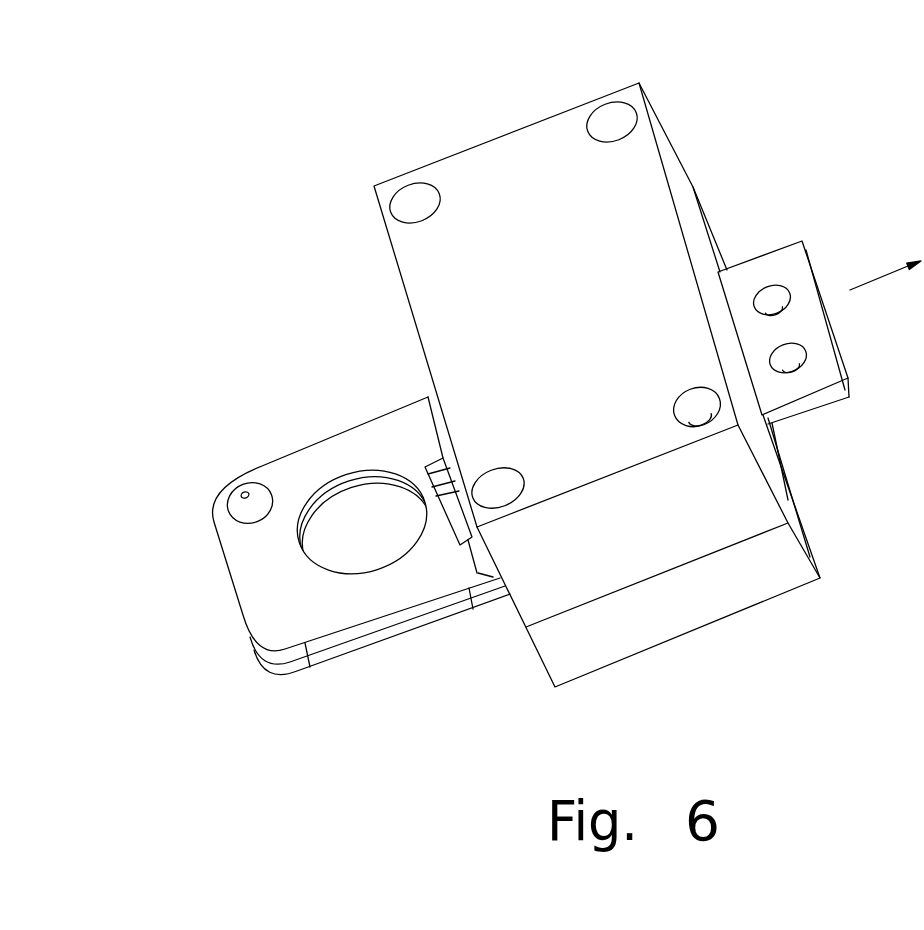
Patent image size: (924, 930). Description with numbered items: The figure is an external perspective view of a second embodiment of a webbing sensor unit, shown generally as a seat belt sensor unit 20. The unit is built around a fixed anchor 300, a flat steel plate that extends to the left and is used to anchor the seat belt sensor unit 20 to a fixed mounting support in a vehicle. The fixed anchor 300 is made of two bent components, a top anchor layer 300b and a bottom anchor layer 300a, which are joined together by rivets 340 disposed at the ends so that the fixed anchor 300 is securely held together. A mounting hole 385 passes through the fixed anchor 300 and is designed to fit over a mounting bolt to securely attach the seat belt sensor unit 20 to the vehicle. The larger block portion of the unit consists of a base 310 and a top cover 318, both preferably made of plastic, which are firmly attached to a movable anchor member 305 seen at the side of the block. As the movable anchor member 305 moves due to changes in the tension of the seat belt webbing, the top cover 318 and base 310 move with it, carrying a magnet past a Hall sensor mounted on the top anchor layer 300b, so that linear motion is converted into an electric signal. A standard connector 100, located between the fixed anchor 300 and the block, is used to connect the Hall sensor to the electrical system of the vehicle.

The seat belt sensor unit 20 is at (224, 150).
The standard connector 100 is at (467, 533).
The fixed anchor 300 is at (319, 560).
The bottom anchor layer 300a is at (327, 655).
The top anchor layer 300b is at (280, 657).
The movable anchor member 305 is at (834, 400).
The base 310 is at (812, 552).
The top cover 318 is at (663, 156).
The rivets 340 is at (235, 507).
The mounting hole 385 is at (333, 550).